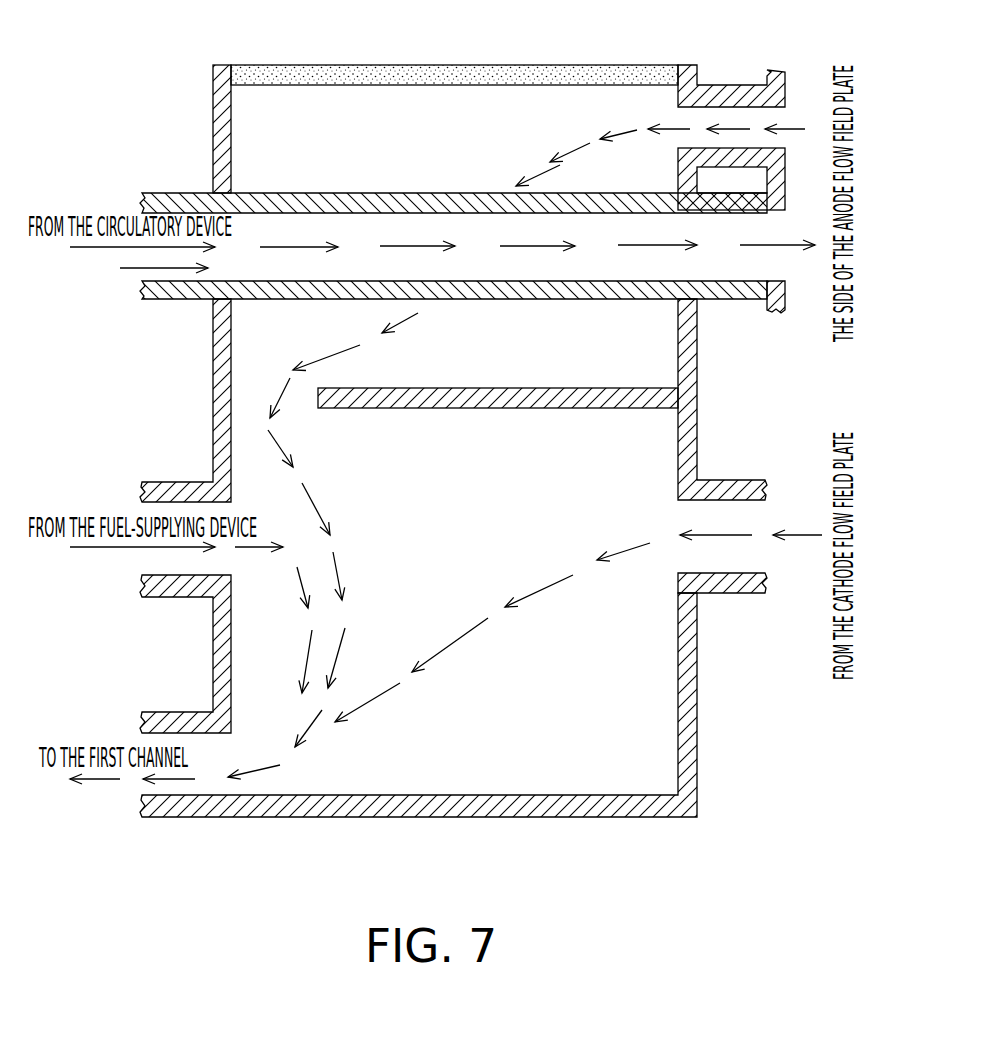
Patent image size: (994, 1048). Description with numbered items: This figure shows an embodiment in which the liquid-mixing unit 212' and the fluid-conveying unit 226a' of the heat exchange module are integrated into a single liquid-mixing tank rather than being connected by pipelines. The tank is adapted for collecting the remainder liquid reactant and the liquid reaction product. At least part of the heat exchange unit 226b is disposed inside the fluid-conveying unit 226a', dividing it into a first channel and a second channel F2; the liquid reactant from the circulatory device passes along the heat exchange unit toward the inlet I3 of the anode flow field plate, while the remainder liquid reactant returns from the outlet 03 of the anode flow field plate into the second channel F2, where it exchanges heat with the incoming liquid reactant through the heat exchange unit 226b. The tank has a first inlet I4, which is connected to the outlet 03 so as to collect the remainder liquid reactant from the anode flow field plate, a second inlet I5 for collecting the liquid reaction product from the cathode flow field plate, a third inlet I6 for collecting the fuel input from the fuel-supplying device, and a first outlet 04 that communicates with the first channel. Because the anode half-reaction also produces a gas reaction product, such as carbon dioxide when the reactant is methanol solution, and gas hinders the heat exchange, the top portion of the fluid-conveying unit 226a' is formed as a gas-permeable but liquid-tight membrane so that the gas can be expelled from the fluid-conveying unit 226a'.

The fluid-conveying unit 226a' is at (196, 103).
The heat exchange unit 226b is at (183, 207).
The first inlet I4 is at (742, 117).
The outlet 03 is at (767, 117).
The first outlet 04 is at (717, 228).
The inlet I3 is at (717, 262).
The second channel F2 is at (580, 347).
The second inlet I5 is at (715, 558).
The third inlet I6 is at (208, 564).
The liquid-mixing unit 212' is at (418, 736).